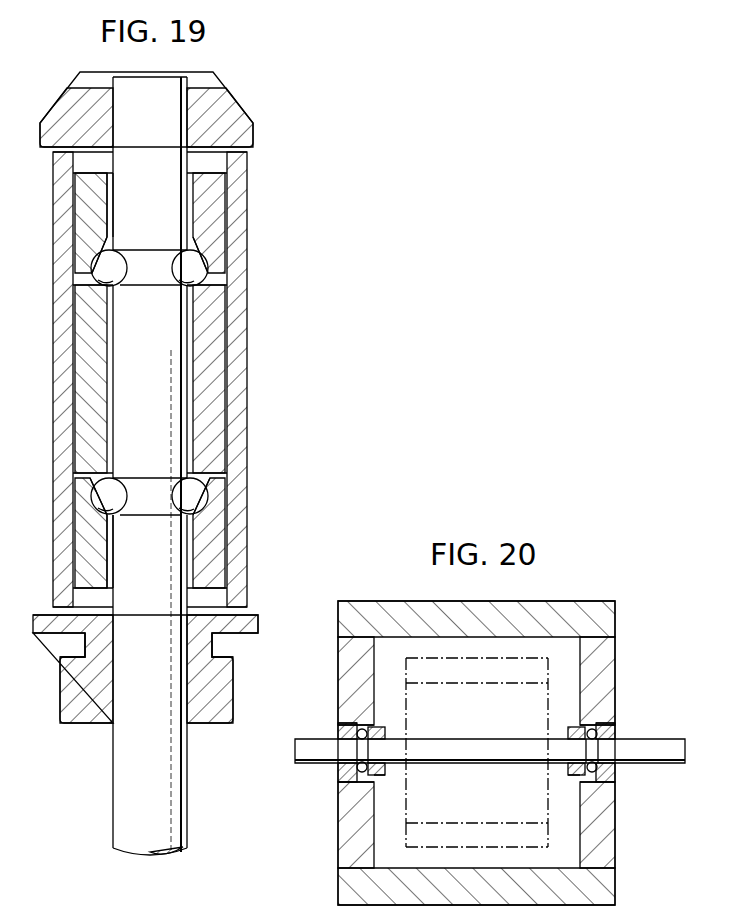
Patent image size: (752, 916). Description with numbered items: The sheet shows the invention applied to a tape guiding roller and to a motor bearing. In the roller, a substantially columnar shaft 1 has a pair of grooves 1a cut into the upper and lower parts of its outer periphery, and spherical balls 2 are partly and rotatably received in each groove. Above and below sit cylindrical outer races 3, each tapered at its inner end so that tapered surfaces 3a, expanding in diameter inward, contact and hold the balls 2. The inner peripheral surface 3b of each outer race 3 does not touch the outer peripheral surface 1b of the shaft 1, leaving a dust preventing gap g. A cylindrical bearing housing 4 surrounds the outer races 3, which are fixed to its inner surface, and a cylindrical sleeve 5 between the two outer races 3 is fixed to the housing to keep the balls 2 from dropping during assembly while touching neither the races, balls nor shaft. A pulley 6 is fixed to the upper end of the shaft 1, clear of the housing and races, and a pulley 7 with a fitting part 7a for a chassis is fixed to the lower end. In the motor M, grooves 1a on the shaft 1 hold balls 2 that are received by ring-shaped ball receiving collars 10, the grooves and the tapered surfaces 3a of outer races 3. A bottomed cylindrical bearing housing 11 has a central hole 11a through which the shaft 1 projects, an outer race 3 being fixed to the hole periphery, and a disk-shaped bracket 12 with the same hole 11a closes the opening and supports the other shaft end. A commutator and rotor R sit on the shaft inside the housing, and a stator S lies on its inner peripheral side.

In FIG. 19, the shaft 1 is at (178, 780).
In FIG. 20, the shaft 1 is at (459, 752).
In FIG. 19, the grooves 1a is at (124, 266).
In FIG. 20, the grooves 1a is at (352, 738).
In FIG. 19, the outer peripheral surface of the shaft 1b is at (184, 582).
In FIG. 19, the balls 2 is at (118, 287).
In FIG. 20, the balls 2 is at (370, 752).
In FIG. 19, the outer race 3 is at (218, 216).
In FIG. 20, the outer race 3 is at (340, 726).
In FIG. 19, the tapered surfaces 3a is at (210, 276).
In FIG. 20, the tapered surfaces 3a is at (348, 724).
In FIG. 19, the inner peripheral surface 3b is at (108, 218).
In FIG. 19, the dust preventing gap g is at (110, 192).
In FIG. 19, the bearing housing 4 is at (55, 390).
In FIG. 19, the sleeve 5 is at (222, 378).
In FIG. 19, the pulley 6 is at (245, 118).
In FIG. 19, the pulley 7 is at (222, 712).
In FIG. 19, the fitting part 7a is at (214, 646).
In FIG. 20, the ball receiving collars 10 is at (373, 776).
In FIG. 20, the bearing housing 11 is at (391, 612).
In FIG. 20, the hole 11a is at (336, 770).
In FIG. 20, the bracket 12 is at (600, 842).
In FIG. 20, the motor M is at (615, 596).
In FIG. 20, the rotor R is at (416, 832).
In FIG. 20, the stator S is at (540, 850).